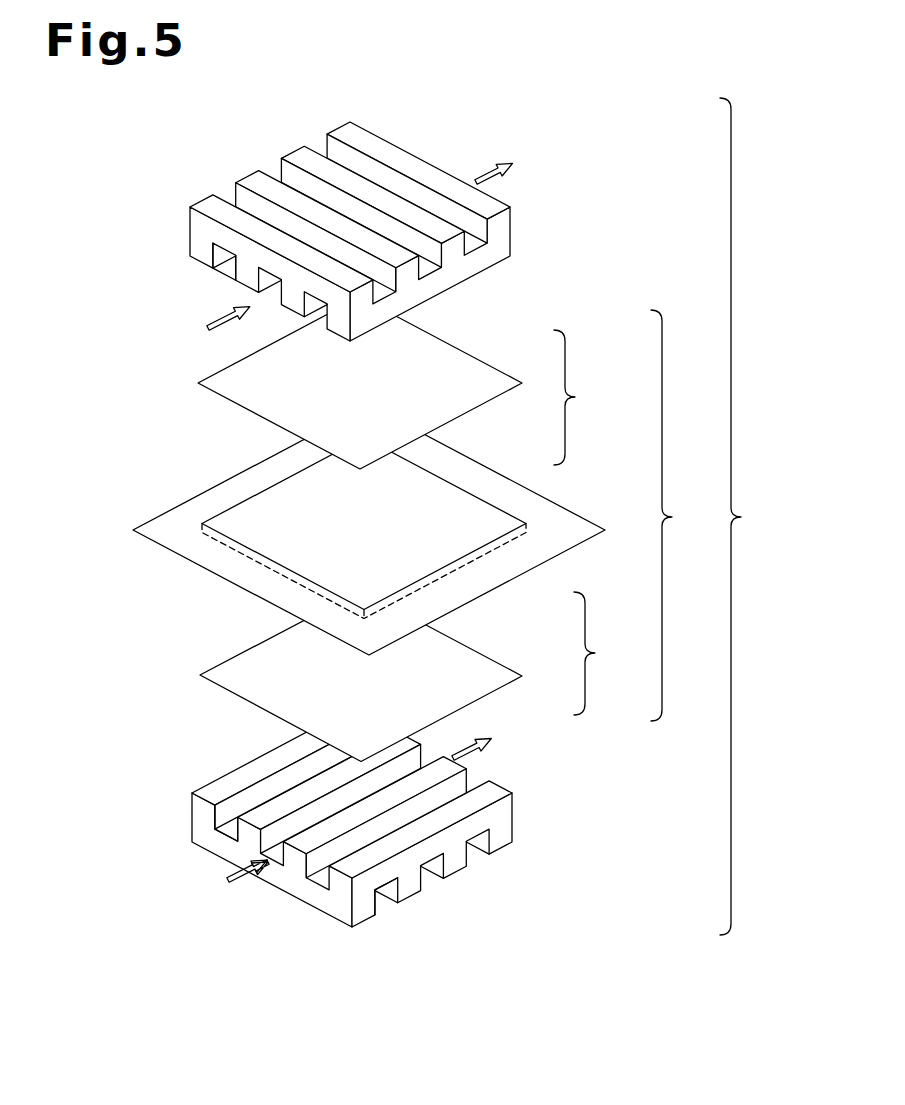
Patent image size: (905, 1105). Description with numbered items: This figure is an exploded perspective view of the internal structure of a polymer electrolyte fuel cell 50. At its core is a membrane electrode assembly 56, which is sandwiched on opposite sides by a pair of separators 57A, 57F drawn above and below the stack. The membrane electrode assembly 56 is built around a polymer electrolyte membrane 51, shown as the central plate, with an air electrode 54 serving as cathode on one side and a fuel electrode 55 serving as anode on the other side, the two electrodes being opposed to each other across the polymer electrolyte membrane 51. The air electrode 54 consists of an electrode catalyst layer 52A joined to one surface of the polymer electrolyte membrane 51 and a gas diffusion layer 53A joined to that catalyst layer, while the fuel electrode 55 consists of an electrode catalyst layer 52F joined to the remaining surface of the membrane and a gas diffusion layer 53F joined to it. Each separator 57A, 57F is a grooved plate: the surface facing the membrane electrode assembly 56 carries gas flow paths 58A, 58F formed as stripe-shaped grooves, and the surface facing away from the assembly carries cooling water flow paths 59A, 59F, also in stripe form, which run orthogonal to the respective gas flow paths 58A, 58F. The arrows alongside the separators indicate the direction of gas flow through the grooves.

The polymer electrolyte fuel cell 50 is at (752, 516).
The polymer electrolyte membrane 51 is at (380, 530).
The electrode catalyst layer 52A is at (490, 501).
The electrode catalyst layer 52F is at (497, 548).
The gas diffusion layer 53A is at (465, 352).
The gas diffusion layer 53F is at (484, 698).
The air electrode 54 is at (584, 397).
The fuel electrode 55 is at (604, 653).
The membrane electrode assembly 56 is at (680, 515).
The separator 57A is at (311, 230).
The separator 57F is at (310, 828).
The gas flow path 58A is at (228, 268).
The gas flow path 58F is at (232, 830).
The cooling water flow path 59A is at (270, 172).
The cooling water flow path 59F is at (382, 906).